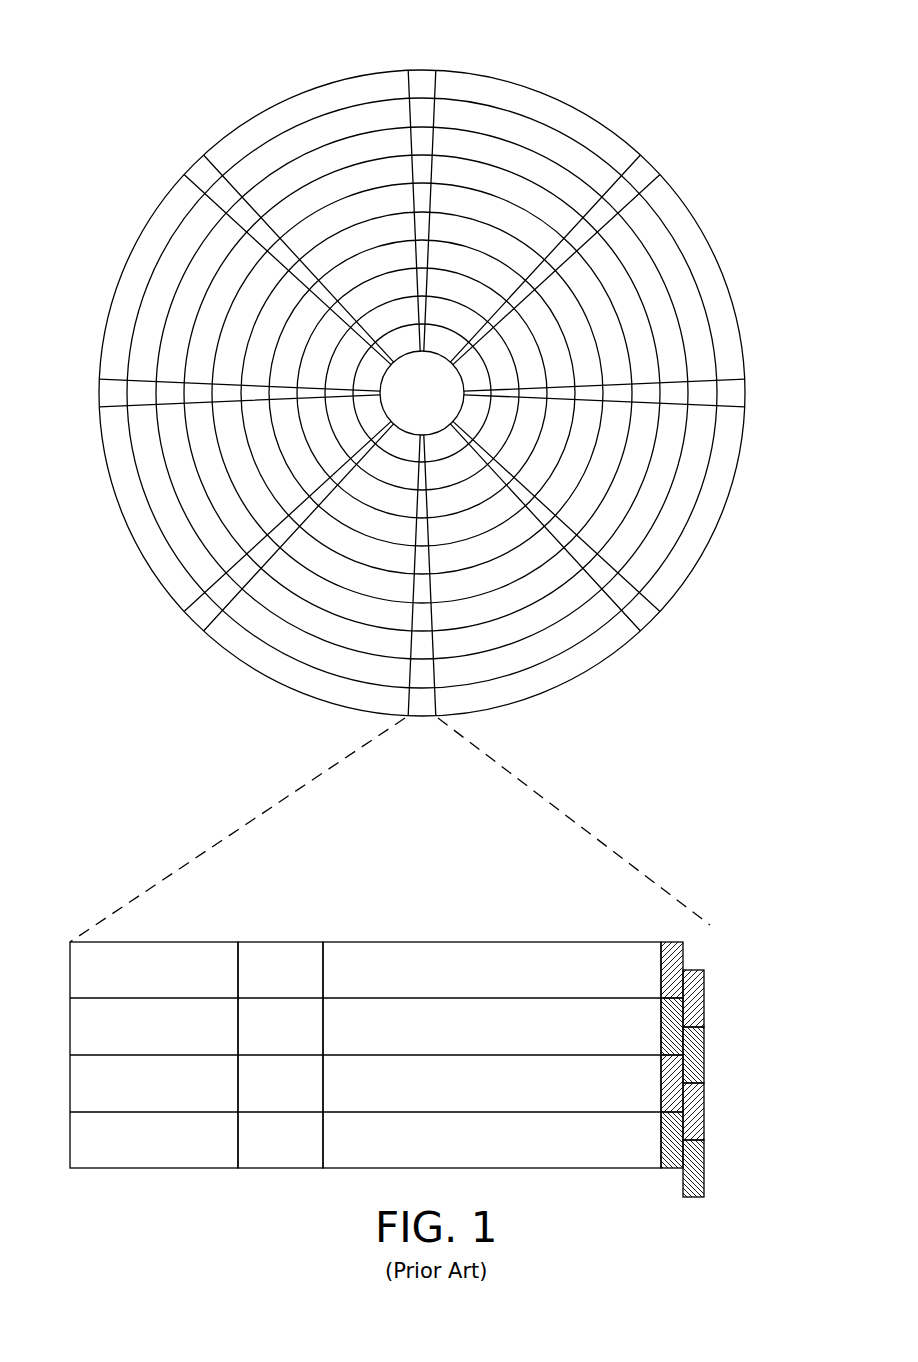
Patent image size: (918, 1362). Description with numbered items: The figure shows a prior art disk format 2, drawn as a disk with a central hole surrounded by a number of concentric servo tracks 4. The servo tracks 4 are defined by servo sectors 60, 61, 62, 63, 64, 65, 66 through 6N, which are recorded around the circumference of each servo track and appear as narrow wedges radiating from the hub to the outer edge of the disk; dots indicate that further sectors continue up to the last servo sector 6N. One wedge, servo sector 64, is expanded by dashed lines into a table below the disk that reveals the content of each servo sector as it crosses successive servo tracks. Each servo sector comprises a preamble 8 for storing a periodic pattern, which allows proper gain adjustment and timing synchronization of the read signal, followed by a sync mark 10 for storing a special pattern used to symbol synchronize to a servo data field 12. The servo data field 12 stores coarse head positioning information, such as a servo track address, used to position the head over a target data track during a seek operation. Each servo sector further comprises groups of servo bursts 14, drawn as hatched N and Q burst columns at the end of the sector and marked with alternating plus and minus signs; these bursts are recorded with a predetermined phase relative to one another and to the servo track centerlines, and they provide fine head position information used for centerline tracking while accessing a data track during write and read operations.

The disk format 2 is at (180, 75).
The servo track 4 is at (531, 135).
The servo sector 60 is at (421, 79).
The servo sector 61 is at (642, 172).
The servo sector 62 is at (748, 393).
The servo sector 63 is at (650, 626).
The servo sector 64 is at (279, 793).
The servo sector 65 is at (196, 626).
The servo sector 66 is at (102, 392).
The servo sector 6N is at (201, 171).
The preamble 8 is at (162, 942).
The sync mark 10 is at (284, 942).
The servo data field 12 is at (482, 942).
The servo bursts 14 is at (699, 940).